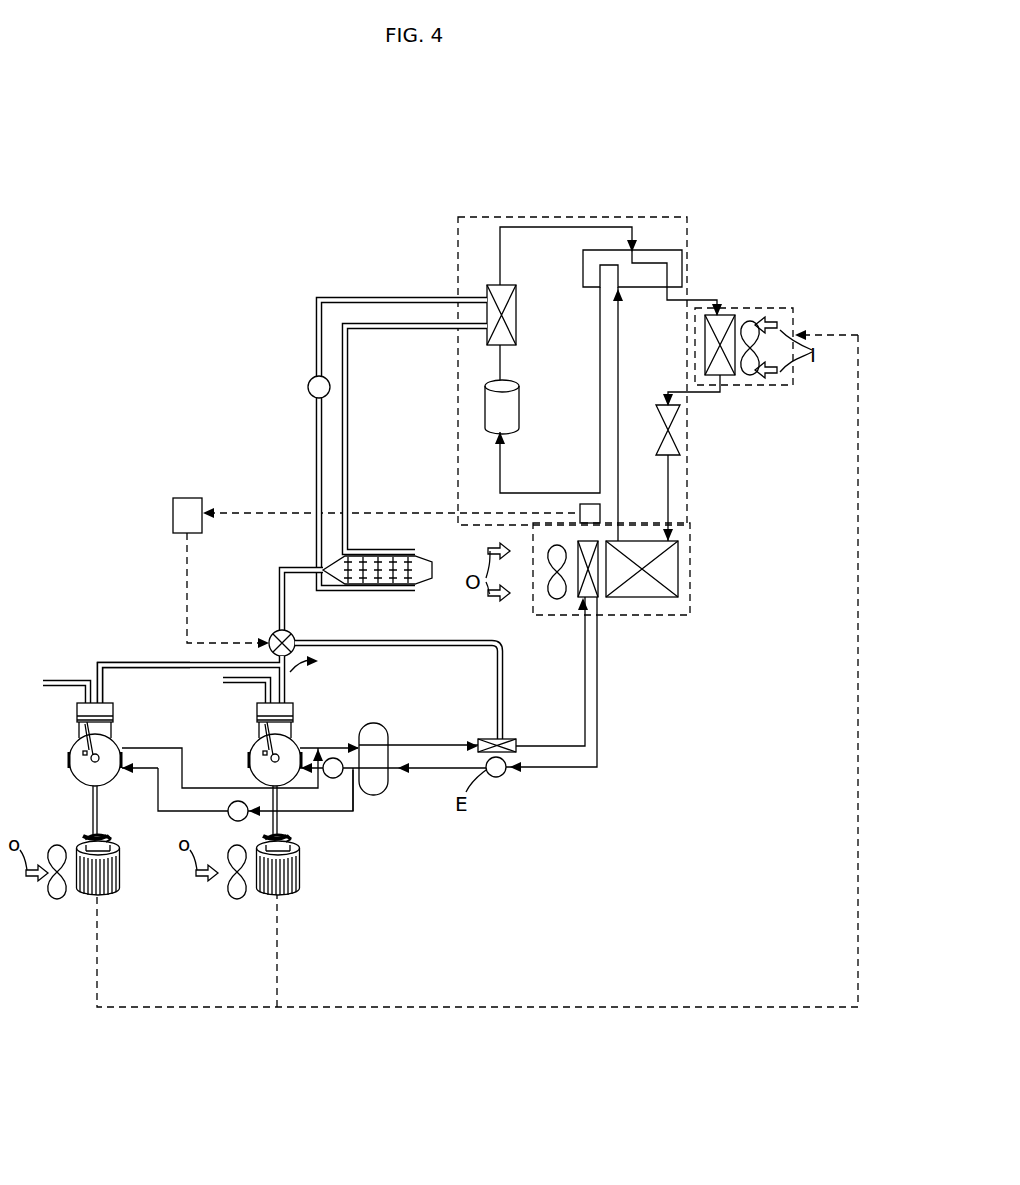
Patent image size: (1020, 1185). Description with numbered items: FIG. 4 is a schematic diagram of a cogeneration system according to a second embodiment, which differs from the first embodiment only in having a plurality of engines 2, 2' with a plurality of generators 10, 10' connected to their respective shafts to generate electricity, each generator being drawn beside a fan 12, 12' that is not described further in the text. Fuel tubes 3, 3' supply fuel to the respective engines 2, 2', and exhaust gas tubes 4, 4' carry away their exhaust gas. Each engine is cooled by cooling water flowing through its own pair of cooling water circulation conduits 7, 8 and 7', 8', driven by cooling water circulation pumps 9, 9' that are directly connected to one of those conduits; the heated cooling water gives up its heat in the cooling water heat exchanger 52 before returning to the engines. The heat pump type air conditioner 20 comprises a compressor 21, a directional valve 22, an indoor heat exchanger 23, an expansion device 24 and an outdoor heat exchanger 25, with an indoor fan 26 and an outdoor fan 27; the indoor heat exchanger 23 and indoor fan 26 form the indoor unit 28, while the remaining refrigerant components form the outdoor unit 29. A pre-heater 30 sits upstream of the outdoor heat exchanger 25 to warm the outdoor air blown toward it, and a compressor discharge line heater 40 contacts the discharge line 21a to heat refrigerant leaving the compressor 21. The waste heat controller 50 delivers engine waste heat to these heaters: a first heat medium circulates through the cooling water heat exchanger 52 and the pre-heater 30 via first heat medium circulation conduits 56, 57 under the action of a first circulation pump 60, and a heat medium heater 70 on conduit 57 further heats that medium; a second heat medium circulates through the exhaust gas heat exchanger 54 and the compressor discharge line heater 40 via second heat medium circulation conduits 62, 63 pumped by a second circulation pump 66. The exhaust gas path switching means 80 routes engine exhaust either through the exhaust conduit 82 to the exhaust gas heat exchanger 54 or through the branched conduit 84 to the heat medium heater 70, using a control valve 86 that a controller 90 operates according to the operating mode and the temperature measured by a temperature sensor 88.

The heat pump type air conditioner 20 is at (718, 188).
The compressor 21 is at (519, 418).
The discharge line 21a is at (503, 357).
The directional valve 22 is at (672, 252).
The indoor heat exchanger 23 is at (725, 318).
The expansion device 24 is at (680, 444).
The outdoor heat exchanger 25 is at (678, 566).
The indoor fan 26 is at (756, 372).
The outdoor fan 27 is at (556, 598).
The indoor unit 28 is at (772, 308).
The outdoor unit 29 is at (672, 616).
The pre-heater 30 is at (592, 597).
The compressor discharge line heater 40 is at (487, 290).
The waste heat controller 50 is at (602, 769).
The cooling water heat exchanger 52 is at (380, 726).
The exhaust gas heat exchanger 54 is at (380, 584).
The first heat medium circulation conduit 56 is at (598, 749).
The first heat medium circulation conduit 57 is at (555, 750).
The first circulation pump 60 is at (504, 776).
The second heat medium circulation conduit 62 is at (315, 340).
The second heat medium circulation conduit 63 is at (350, 362).
The second circulation pump 66 is at (308, 388).
The heat medium heater 70 is at (506, 738).
The exhaust gas path switching means 80 is at (175, 605).
The exhaust conduit 82 is at (278, 592).
The branched conduit 84 is at (428, 648).
The control valve 86 is at (288, 632).
The temperature sensor 88 is at (600, 510).
The controller 90 is at (186, 498).
The engine 2 is at (254, 771).
The engine 2' is at (72, 771).
The fuel tube 3 is at (237, 708).
The fuel tube 3' is at (57, 708).
The exhaust tube 4 is at (215, 679).
The exhaust gas tube 4' is at (145, 684).
The cooling water circulation conduit 7 is at (329, 722).
The cooling water circulation conduit 7' is at (222, 744).
The cooling water circulation conduit 8 is at (360, 803).
The cooling water circulation conduit 8' is at (171, 799).
The cooling water circulation pump 9 is at (329, 796).
The cooling water circulation pump 9' is at (275, 808).
The generator 10 is at (290, 903).
The generator 10' is at (112, 903).
The fan 12 is at (224, 903).
The fan 12' is at (45, 903).